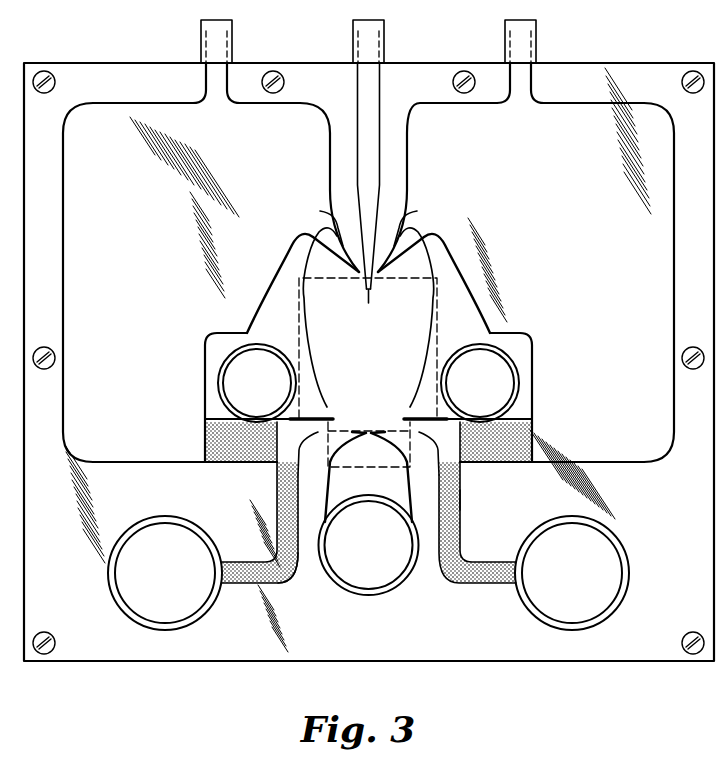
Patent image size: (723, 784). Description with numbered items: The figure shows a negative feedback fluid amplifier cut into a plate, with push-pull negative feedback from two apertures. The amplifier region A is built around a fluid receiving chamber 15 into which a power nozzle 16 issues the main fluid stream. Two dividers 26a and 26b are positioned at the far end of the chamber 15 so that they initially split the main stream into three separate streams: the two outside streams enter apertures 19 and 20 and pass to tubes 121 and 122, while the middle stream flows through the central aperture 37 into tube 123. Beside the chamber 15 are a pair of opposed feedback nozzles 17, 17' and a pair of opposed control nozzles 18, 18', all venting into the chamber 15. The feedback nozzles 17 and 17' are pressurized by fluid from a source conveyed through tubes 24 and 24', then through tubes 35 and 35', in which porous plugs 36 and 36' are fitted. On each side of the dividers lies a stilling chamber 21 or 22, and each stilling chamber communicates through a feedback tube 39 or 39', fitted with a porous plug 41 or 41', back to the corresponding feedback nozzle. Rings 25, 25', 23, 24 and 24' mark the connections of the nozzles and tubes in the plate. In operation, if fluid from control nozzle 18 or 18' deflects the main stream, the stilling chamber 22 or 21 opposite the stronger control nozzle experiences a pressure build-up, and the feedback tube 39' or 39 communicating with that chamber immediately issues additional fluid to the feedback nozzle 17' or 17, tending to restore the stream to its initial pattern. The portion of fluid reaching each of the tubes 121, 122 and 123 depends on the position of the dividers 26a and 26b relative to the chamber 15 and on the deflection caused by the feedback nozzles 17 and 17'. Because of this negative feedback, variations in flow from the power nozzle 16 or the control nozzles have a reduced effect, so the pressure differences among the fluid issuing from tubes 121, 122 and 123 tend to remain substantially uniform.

The tube 121 is at (530, 73).
The tube 122 is at (222, 73).
The tube 123 is at (378, 73).
The stilling chamber 21 is at (529, 208).
The stilling chamber 22 is at (138, 277).
The aperture 19 is at (416, 225).
The aperture 20 is at (321, 225).
The divider 26a is at (424, 237).
The divider 26b is at (313, 237).
The aperture 37 is at (368, 295).
The chamber 15 is at (355, 361).
The amplifier A is at (331, 283).
The right ring 25 is at (487, 383).
The left ring 25' is at (252, 378).
The control nozzle 18 is at (414, 396).
The control nozzle 18' is at (325, 398).
The feedback tube 39 is at (515, 424).
The feedback tube 39' is at (221, 425).
The porous plug 41 is at (526, 435).
The porous plug 41' is at (207, 440).
The feedback nozzle 17 is at (428, 454).
The feedback nozzle 17' is at (311, 454).
The power nozzle 16 is at (366, 442).
The porous plug 36 is at (477, 522).
The porous plug 36' is at (260, 522).
The tube 35 is at (479, 498).
The tube 35' is at (304, 577).
The central outlet ring 23 is at (370, 585).
The tube 24 is at (584, 568).
The tube 24' is at (165, 561).